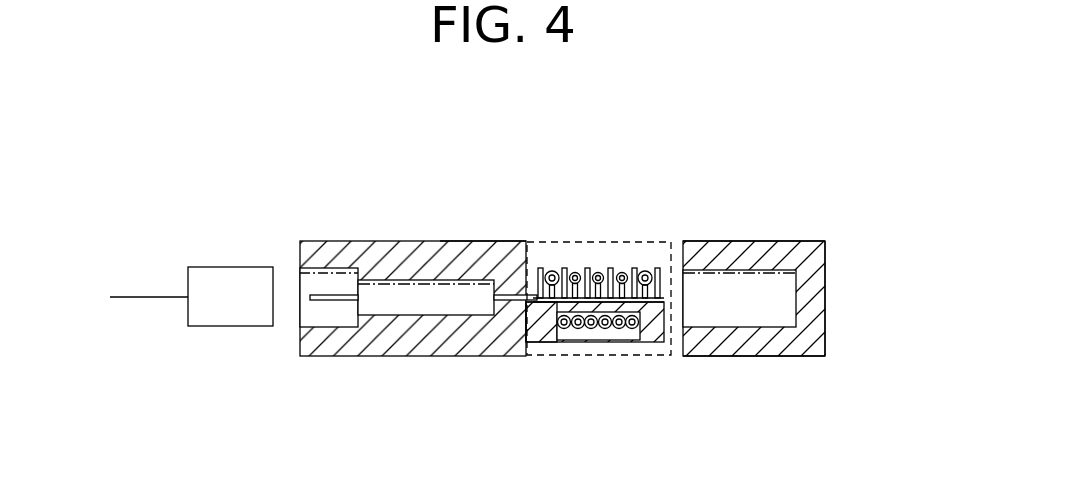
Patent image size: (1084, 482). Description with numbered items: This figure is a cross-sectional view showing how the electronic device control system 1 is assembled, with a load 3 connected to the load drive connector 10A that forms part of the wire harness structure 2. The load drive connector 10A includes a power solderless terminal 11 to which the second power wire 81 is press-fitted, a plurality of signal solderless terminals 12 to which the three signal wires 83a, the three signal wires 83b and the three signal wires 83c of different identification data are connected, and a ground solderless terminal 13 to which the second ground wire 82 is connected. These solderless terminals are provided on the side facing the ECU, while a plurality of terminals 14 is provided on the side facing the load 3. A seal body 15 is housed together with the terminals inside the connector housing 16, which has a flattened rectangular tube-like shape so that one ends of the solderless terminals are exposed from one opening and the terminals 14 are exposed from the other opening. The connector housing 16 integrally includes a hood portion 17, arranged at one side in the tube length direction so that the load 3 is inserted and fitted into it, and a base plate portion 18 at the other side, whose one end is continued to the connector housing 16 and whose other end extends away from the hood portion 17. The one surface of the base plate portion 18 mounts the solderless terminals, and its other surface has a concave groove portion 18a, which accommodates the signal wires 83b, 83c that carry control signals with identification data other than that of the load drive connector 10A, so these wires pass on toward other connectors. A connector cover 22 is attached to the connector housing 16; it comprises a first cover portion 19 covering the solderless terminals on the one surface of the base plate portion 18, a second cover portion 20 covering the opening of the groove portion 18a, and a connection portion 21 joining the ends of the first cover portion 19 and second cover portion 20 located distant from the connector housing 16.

The electronic device control system 1 is at (622, 130).
The wire harness structure 2 is at (630, 172).
The load 3 is at (228, 267).
The load drive connector 10A is at (558, 167).
The power solderless terminal 11 is at (528, 242).
The signal solderless terminal 12 is at (556, 302).
The ground solderless terminal 13 is at (662, 268).
The terminal 14 is at (343, 295).
The seal body 15 is at (402, 305).
The connector housing 16 is at (465, 241).
The hood portion 17 is at (320, 325).
The base plate portion 18 is at (663, 345).
The groove portion 18a is at (643, 343).
The first cover portion 19 is at (730, 250).
The second cover portion 20 is at (762, 338).
The connection portion 21 is at (820, 298).
The connector cover 22 is at (825, 241).
The second power wire 81 is at (548, 268).
The second ground wire 82 is at (643, 268).
The signal wires 83a is at (620, 268).
The signal wires 83b is at (591, 330).
The signal wires 83c is at (632, 330).